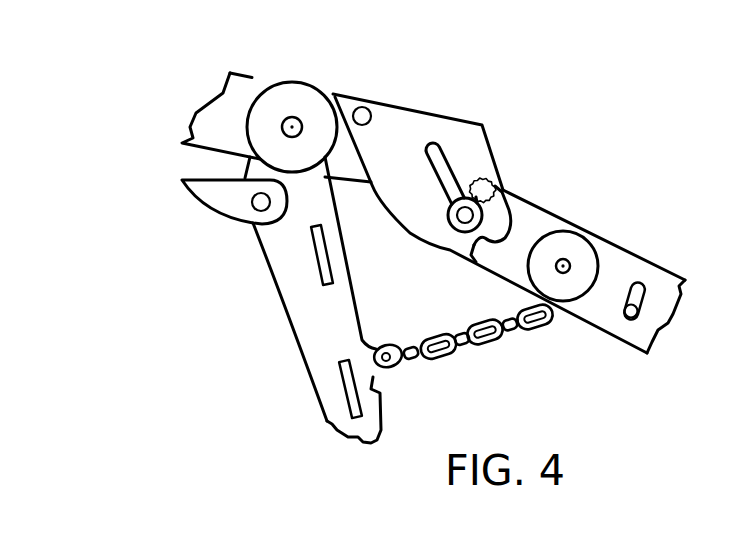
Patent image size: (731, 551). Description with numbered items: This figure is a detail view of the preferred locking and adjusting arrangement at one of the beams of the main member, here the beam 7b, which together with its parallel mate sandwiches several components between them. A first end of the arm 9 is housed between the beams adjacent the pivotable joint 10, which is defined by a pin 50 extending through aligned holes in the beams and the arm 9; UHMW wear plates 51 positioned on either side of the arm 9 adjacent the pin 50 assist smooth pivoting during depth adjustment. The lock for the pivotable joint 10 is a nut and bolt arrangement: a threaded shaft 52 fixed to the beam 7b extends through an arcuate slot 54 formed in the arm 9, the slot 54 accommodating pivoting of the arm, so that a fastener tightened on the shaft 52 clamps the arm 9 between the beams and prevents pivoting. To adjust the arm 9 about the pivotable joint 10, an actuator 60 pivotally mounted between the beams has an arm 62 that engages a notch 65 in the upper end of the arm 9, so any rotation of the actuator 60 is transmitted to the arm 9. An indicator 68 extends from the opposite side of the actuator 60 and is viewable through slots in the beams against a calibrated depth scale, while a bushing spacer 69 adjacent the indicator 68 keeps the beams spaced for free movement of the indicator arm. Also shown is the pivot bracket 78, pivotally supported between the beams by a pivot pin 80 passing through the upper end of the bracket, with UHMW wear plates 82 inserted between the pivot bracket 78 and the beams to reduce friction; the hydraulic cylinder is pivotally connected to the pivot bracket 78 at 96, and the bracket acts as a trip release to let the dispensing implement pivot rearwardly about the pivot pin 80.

The beam 7b is at (398, 127).
The arm 9 is at (610, 305).
The pivotable joint 10 is at (570, 266).
The pin 50 is at (564, 272).
The wear plates 51 is at (573, 243).
The threaded shaft 52 is at (642, 284).
The slot 54 is at (633, 325).
The actuator 60 is at (422, 197).
The arm 62 is at (479, 236).
The notch 65 is at (497, 231).
The indicator 68 is at (441, 145).
The bushing spacer 69 is at (360, 107).
The pivot bracket 78 is at (260, 172).
The pivot pin 80 is at (283, 121).
The wear plates 82 is at (290, 90).
The pivotal connection 96 is at (260, 203).